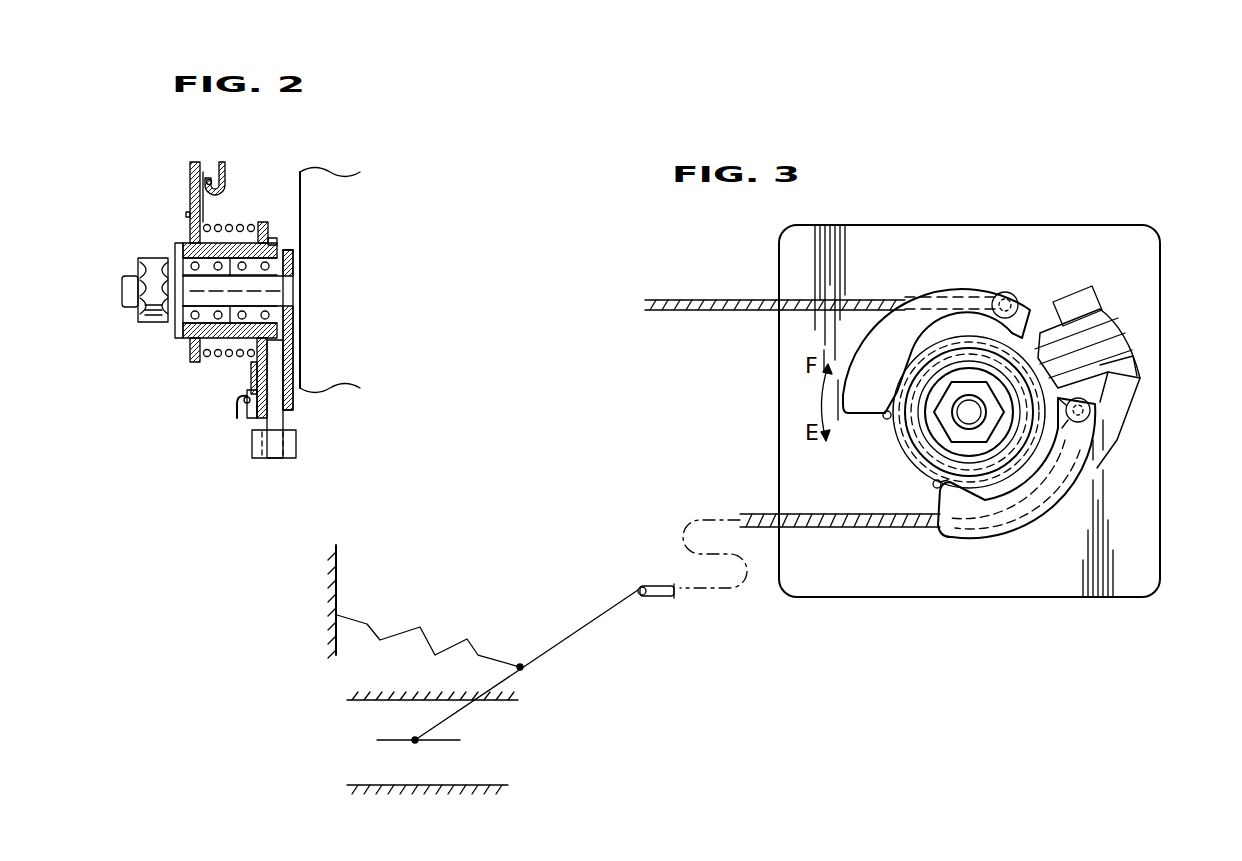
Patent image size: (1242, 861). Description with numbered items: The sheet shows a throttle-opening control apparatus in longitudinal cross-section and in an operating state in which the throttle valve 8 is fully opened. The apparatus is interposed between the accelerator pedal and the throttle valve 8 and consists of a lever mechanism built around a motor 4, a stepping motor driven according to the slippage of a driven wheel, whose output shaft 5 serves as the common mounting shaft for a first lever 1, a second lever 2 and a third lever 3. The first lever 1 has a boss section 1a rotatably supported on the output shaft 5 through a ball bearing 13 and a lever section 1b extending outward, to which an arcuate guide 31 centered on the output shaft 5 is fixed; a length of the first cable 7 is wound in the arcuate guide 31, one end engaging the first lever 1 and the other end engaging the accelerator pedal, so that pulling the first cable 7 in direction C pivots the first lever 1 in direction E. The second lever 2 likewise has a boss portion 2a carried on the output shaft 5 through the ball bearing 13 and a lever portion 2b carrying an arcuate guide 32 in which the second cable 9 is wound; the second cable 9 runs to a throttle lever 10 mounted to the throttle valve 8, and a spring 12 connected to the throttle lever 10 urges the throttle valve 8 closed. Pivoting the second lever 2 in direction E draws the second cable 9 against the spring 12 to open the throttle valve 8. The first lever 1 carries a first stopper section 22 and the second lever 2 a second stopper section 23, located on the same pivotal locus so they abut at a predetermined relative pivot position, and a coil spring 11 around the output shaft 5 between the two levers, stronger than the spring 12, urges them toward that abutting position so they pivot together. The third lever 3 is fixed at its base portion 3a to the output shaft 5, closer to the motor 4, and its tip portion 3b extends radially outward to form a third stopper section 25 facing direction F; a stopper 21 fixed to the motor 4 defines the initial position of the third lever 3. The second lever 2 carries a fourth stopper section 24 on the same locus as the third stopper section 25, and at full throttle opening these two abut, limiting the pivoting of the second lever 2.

In FIG. 2, the first lever 1 is at (162, 171).
In FIG. 3, the first lever 1 is at (936, 305).
In FIG. 2, the boss section 1a is at (180, 242).
In FIG. 2, the lever section 1b is at (190, 173).
In FIG. 2, the second lever 2 is at (241, 335).
In FIG. 3, the second lever 2 is at (1005, 535).
In FIG. 2, the boss portion 2a is at (267, 220).
In FIG. 2, the lever portion 2b is at (258, 415).
In FIG. 2, the third lever 3 is at (328, 300).
In FIG. 3, the third lever 3 is at (1130, 368).
In FIG. 2, the base portion 3a is at (290, 252).
In FIG. 2, the tip portion 3b is at (296, 414).
In FIG. 2, the motor 4 is at (305, 280).
In FIG. 3, the motor 4 is at (1038, 238).
In FIG. 2, the output shaft 5 is at (196, 284).
In FIG. 3, the output shaft 5 is at (955, 425).
In FIG. 2, the first cable 7 is at (209, 178).
In FIG. 3, the first cable 7 is at (704, 305).
In FIG. 3, the throttle valve 8 is at (406, 740).
In FIG. 2, the second cable 9 is at (258, 404).
In FIG. 3, the second cable 9 is at (827, 514).
In FIG. 3, the throttle lever 10 is at (583, 628).
In FIG. 2, the coil spring 11 is at (229, 222).
In FIG. 3, the coil spring 11 is at (933, 482).
In FIG. 3, the spring 12 is at (459, 638).
In FIG. 2, the ball bearing 13 is at (193, 316).
In FIG. 3, the stopper 21 is at (1078, 297).
In FIG. 3, the first stopper section 22 is at (1065, 352).
In FIG. 3, the second stopper section 23 is at (1044, 368).
In FIG. 2, the fourth stopper section 24 is at (265, 458).
In FIG. 3, the fourth stopper section 24 is at (1133, 379).
In FIG. 2, the third stopper section 25 is at (275, 447).
In FIG. 3, the third stopper section 25 is at (1136, 373).
In FIG. 2, the arcuate guide 31 is at (222, 160).
In FIG. 3, the arcuate guide 31 is at (1005, 305).
In FIG. 2, the arcuate guide 32 is at (237, 400).